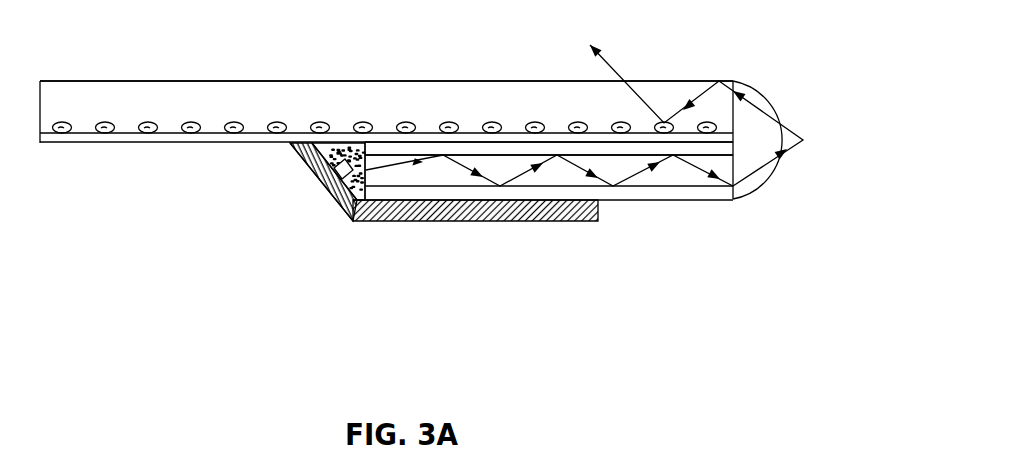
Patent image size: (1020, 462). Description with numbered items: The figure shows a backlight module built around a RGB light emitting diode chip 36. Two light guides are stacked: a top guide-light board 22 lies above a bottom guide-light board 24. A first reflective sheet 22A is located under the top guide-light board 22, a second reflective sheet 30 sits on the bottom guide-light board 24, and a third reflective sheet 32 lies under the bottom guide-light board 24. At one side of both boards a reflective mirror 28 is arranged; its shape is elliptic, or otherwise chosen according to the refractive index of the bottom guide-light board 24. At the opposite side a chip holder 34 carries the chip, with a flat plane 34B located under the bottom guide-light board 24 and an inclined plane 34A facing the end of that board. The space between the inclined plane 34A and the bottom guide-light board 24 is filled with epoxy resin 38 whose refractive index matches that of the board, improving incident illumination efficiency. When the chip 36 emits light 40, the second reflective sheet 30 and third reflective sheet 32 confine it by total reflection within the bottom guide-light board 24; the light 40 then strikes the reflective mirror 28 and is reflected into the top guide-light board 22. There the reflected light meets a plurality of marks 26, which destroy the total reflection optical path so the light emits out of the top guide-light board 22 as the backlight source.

The top guide-light board 22 is at (180, 98).
The first reflective sheet 22A is at (80, 142).
The marks 26 is at (407, 122).
The second reflective sheet 30 is at (387, 150).
The bottom guide-light board 24 is at (706, 186).
The reflective mirror 28 is at (795, 103).
The third reflective sheet 32 is at (608, 193).
The chip holder 34 is at (364, 222).
The inclined plane 34A is at (318, 176).
The flat plane 34B is at (433, 205).
The RGB light emitting diode chip 36 is at (302, 150).
The epoxy resin 38 is at (355, 222).
The light 40 is at (625, 70).